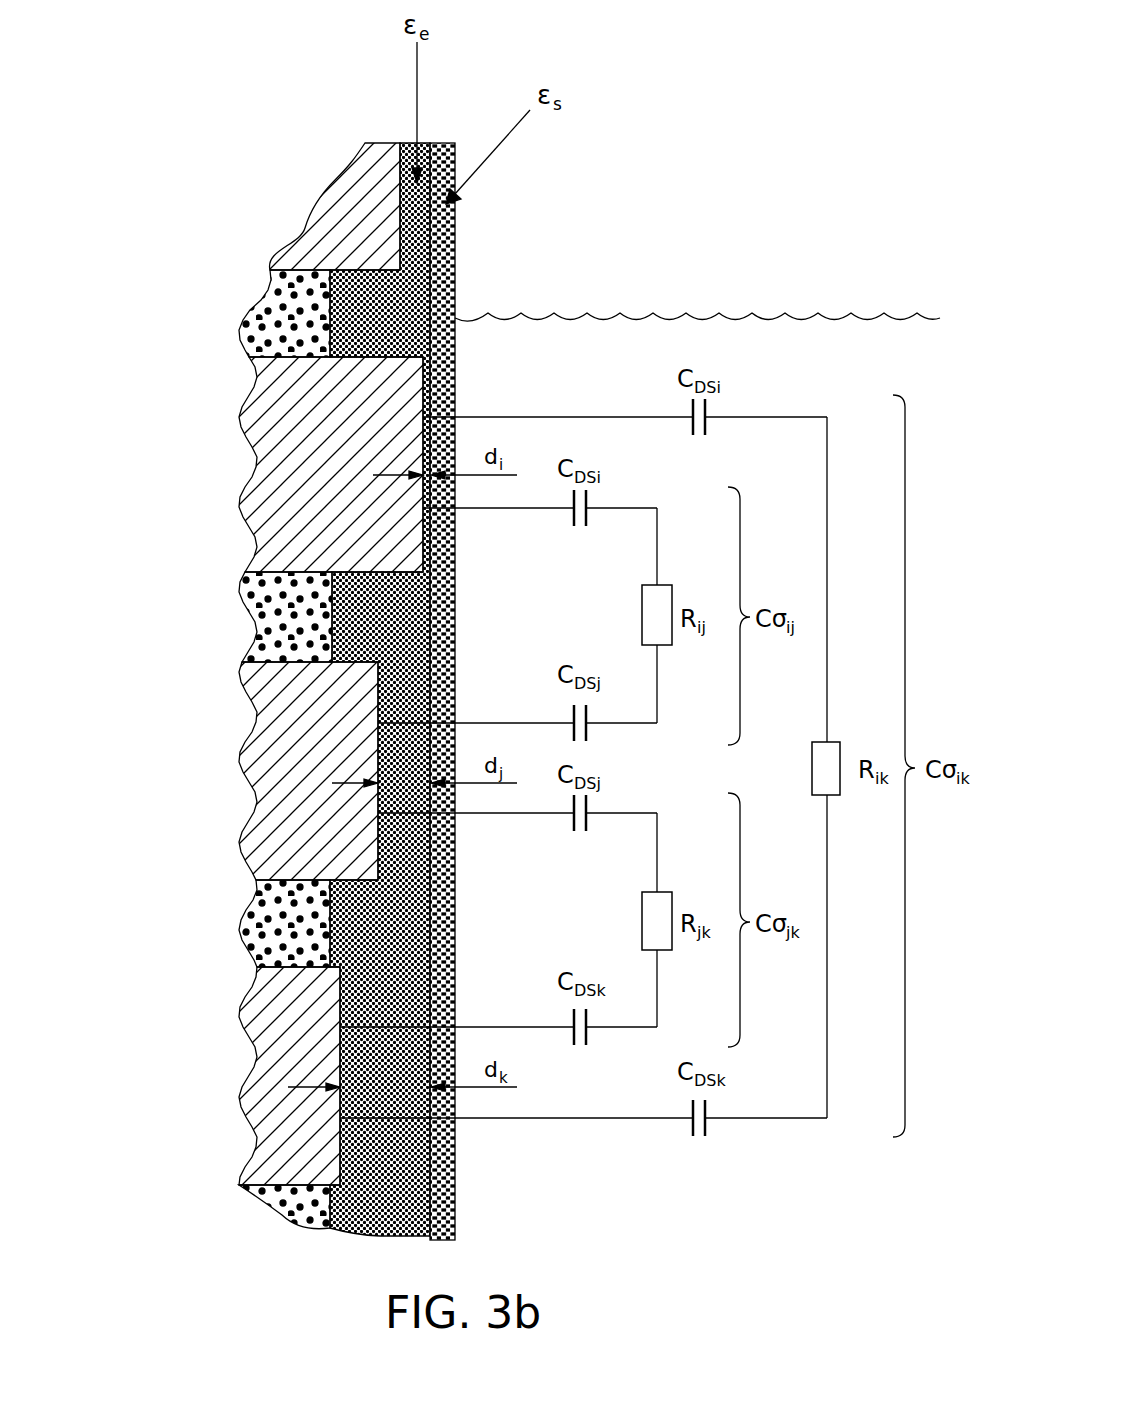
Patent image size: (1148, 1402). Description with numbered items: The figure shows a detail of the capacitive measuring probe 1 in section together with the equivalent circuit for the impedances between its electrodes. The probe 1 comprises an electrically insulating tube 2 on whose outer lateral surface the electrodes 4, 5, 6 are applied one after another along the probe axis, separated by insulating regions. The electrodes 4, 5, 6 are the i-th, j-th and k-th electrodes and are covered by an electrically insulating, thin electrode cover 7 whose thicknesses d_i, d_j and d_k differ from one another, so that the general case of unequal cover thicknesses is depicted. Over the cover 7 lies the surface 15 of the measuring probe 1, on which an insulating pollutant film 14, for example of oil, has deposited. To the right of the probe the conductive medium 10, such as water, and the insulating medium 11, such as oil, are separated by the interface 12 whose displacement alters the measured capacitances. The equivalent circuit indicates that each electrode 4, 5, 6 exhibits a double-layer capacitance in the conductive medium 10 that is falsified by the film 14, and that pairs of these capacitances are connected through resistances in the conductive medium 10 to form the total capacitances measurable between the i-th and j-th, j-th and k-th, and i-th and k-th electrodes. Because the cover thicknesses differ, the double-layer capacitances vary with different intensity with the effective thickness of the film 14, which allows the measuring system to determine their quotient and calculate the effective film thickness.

The capacitive measuring probe 1 is at (350, 100).
The tube 2 is at (300, 617).
The electrode 4 is at (340, 438).
The electrode 5 is at (313, 745).
The electrode 6 is at (287, 1049).
The electrode cover 7 is at (388, 922).
The conductive medium 10 is at (557, 367).
The insulating medium 11 is at (557, 289).
The interface 12 is at (637, 316).
The pollutant film 14 is at (443, 237).
The surface of the measuring probe 15 is at (432, 294).